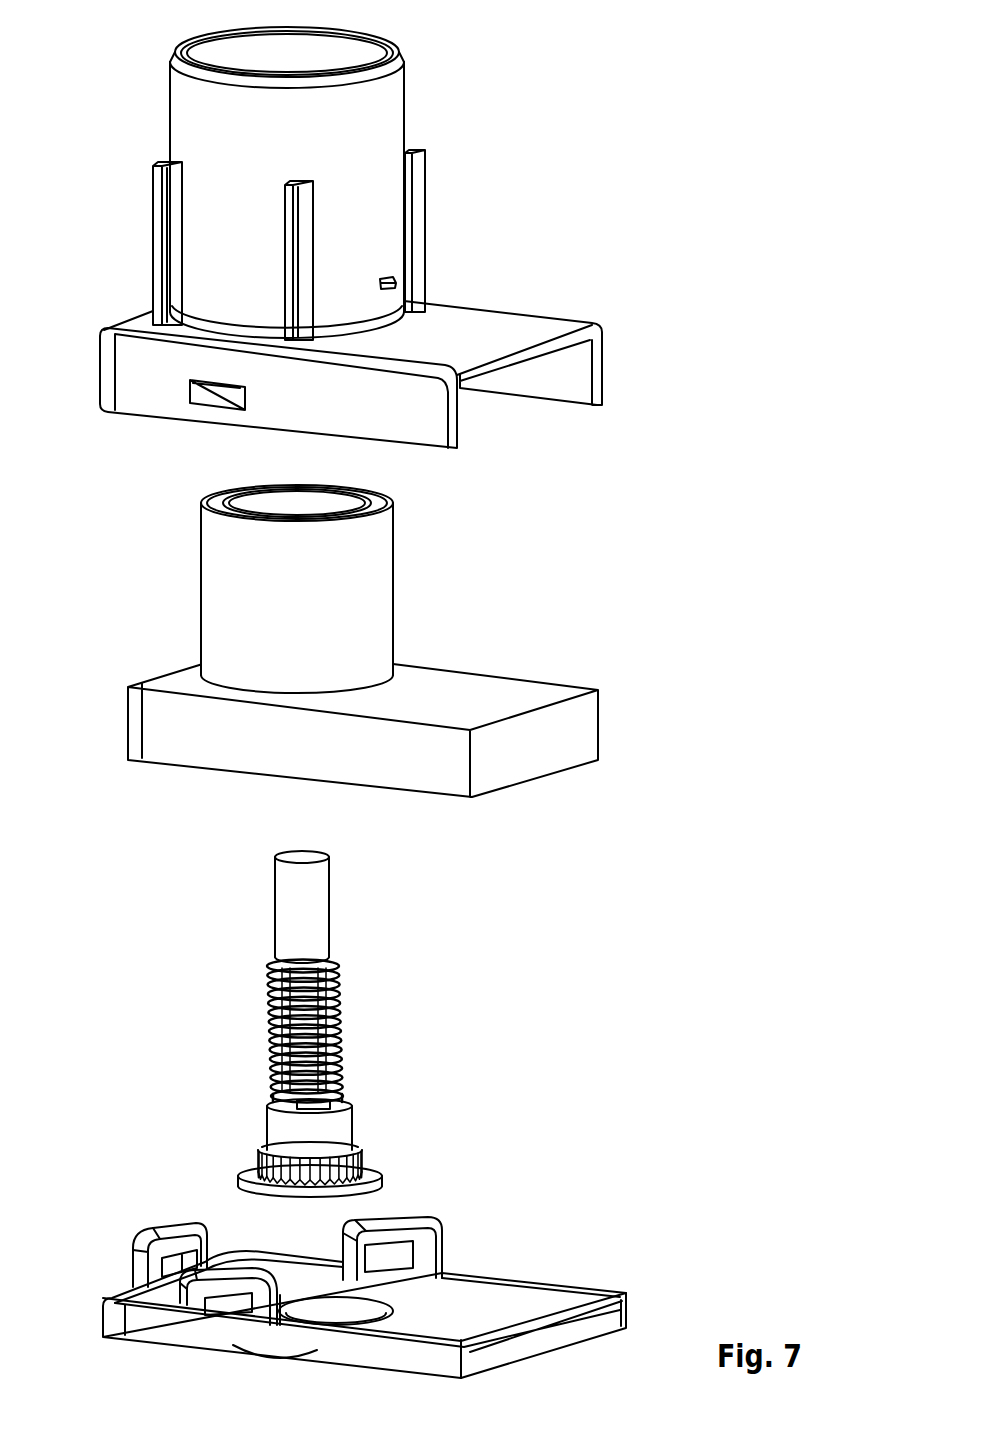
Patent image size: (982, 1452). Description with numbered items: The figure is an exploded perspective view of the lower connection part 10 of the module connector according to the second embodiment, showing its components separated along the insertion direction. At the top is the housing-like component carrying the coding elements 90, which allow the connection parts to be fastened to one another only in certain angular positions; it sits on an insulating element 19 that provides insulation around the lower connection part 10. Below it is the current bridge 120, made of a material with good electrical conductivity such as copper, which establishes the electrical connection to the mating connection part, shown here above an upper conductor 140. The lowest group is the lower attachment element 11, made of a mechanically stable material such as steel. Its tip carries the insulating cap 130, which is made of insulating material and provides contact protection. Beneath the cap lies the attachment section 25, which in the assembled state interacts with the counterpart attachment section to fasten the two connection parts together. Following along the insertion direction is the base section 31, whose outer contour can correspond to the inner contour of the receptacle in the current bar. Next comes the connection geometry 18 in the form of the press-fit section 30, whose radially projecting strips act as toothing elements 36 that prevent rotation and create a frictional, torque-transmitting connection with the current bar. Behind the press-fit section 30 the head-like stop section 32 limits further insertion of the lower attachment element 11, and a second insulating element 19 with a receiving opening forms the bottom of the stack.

The lower connection part 10 is at (560, 38).
The lower attachment element 11 is at (377, 937).
The connection geometry 18 is at (245, 1164).
The insulating element 19 is at (497, 335).
The attachment section 25 is at (268, 1017).
The press-fit section 30 is at (362, 1164).
The base section 31 is at (268, 1124).
The stop section 32 is at (240, 1190).
The toothing elements 36 is at (371, 1144).
The coding elements 90 is at (148, 226).
The current bridge 120 is at (222, 557).
The insulating cap 130 is at (292, 888).
The upper conductor 140 is at (497, 696).